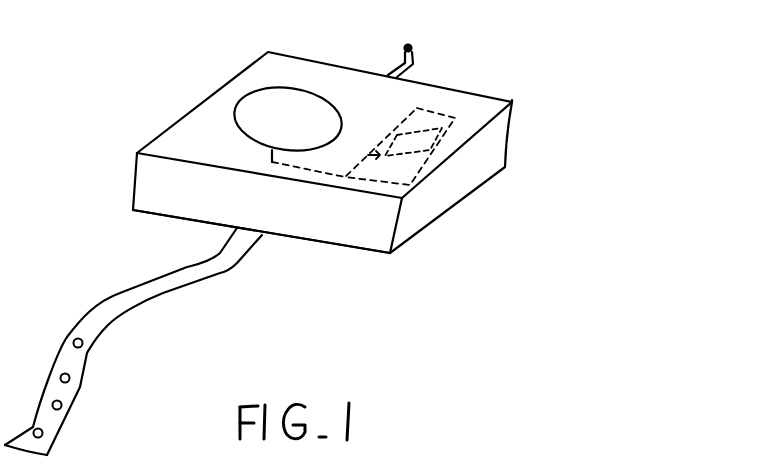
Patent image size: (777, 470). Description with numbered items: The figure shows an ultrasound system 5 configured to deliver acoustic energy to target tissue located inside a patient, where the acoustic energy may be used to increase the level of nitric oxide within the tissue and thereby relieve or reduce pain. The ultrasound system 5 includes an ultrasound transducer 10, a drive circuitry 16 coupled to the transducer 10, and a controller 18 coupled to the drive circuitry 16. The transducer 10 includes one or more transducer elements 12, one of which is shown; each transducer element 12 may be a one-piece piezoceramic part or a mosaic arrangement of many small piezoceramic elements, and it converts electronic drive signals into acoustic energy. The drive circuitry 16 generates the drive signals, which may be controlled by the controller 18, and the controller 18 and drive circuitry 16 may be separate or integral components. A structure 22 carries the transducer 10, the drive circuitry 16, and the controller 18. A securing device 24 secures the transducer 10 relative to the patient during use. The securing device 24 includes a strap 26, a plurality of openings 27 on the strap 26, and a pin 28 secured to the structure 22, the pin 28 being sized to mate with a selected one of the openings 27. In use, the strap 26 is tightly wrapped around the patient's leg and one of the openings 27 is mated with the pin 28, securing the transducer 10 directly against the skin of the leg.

The ultrasound system 5 is at (668, 122).
The ultrasound transducer 10 is at (273, 118).
The transducer element 12 is at (302, 102).
The drive circuitry 16 is at (392, 175).
The controller 18 is at (427, 127).
The structure 22 is at (350, 240).
The securing device 24 is at (163, 295).
The strap 26 is at (230, 270).
The openings 27 is at (62, 405).
The pin 28 is at (418, 50).